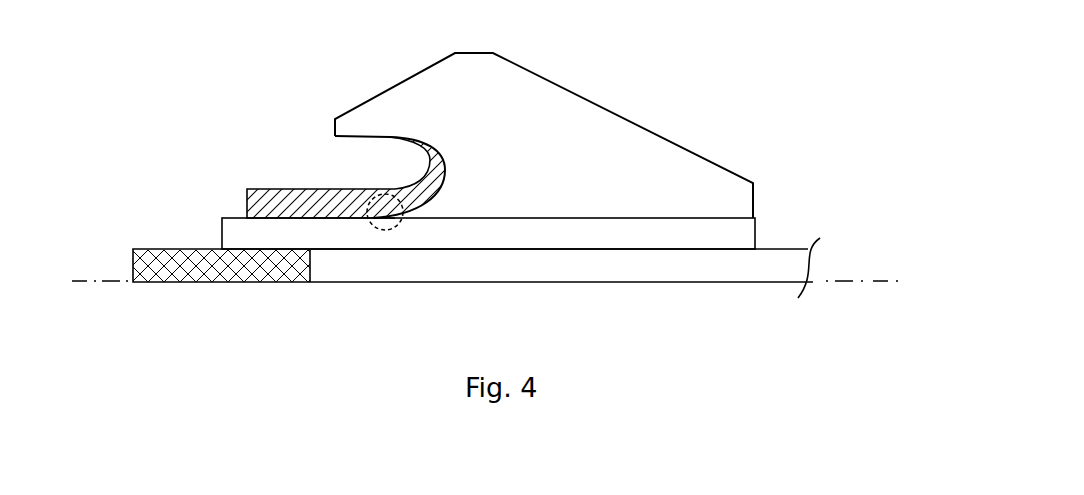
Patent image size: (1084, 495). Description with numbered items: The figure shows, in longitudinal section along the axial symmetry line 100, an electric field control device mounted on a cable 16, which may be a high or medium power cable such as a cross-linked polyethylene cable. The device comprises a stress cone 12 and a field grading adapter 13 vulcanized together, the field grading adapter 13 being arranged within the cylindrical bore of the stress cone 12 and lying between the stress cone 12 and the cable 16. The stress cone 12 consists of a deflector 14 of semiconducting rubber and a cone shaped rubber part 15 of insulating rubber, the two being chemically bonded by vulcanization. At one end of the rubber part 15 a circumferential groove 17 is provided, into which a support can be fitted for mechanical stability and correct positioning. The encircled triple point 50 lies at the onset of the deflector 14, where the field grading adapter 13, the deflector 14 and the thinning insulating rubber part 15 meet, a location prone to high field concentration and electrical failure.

The stress cone 12 is at (698, 150).
The field grading adapter 13 is at (747, 232).
The deflector 14 is at (247, 203).
The cone shaped rubber part 15 is at (563, 125).
The cable 16 is at (562, 265).
The circumferential groove 17 is at (355, 160).
The triple point 50 is at (358, 201).
The axial symmetry line 100 is at (862, 280).